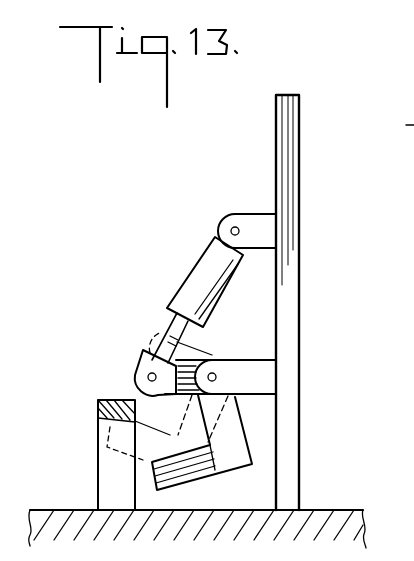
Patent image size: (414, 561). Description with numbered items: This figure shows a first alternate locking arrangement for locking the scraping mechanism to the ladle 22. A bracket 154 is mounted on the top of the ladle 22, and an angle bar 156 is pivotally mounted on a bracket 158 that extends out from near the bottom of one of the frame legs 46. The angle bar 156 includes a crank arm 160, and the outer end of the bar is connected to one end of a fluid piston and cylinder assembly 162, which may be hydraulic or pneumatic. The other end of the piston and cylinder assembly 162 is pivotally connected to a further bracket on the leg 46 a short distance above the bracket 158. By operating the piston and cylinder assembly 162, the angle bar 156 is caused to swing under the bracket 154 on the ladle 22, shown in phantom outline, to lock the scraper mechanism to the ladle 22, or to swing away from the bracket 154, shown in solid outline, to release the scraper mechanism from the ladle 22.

The frame leg 46 is at (283, 145).
The piston and cylinder assembly 162 is at (197, 278).
The bracket 158 is at (265, 368).
The crank arm 160 is at (172, 389).
The angle bar 156 is at (231, 456).
The bracket 154 is at (102, 400).
The ladle 22 is at (56, 510).